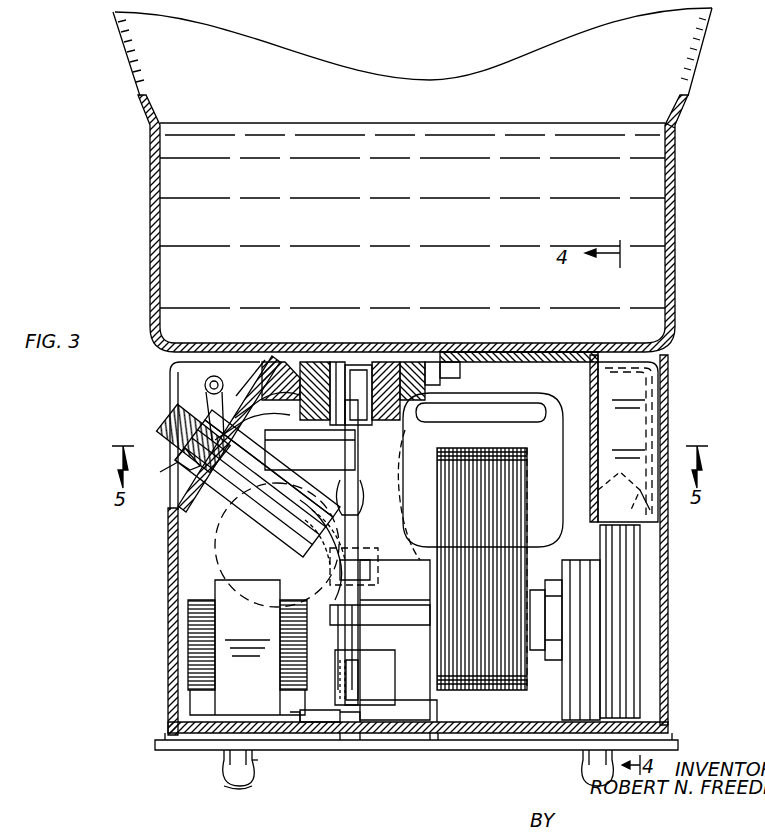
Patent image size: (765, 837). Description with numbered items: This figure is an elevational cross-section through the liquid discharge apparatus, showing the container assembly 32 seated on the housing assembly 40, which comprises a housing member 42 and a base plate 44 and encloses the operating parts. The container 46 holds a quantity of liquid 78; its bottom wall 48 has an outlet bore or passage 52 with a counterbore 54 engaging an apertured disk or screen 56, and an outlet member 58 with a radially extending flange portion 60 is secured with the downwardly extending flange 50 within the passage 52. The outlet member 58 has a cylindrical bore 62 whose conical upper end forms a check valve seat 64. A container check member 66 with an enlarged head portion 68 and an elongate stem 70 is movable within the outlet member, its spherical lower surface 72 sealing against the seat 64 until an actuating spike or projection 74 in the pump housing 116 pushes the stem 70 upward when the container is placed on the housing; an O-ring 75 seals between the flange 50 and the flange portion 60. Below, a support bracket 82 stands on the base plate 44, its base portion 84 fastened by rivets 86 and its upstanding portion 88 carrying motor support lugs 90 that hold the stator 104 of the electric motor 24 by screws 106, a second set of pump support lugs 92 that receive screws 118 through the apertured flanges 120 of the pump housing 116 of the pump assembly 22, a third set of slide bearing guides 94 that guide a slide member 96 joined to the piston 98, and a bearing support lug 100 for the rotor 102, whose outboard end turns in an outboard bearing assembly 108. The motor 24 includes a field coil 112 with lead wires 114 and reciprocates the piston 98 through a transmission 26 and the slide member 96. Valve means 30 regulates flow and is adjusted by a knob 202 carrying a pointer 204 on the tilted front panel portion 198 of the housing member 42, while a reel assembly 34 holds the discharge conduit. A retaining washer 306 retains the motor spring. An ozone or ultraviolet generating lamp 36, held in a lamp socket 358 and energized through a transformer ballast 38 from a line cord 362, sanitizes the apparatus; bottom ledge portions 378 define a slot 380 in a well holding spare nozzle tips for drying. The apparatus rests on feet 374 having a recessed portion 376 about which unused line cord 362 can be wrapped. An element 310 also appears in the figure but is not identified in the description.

The pump assembly 22 is at (285, 616).
The electric motor 24 is at (530, 690).
The transmission 26 is at (352, 750).
The valve means 30 is at (168, 540).
The container assembly 32 is at (692, 184).
The reel assembly 34 is at (178, 560).
The ozone or ultraviolet generating lamp 36 is at (650, 390).
The transformer ballast 38 is at (222, 740).
The housing assembly 40 is at (678, 600).
The housing member 42 is at (640, 548).
The base plate 44 is at (540, 745).
The container 46 is at (676, 140).
The bottom wall 48 is at (452, 352).
The flange 50 is at (404, 360).
The outlet bore or passage 52 is at (390, 360).
The counterbore 54 is at (312, 360).
The apertured disk or screen 56 is at (356, 364).
The outlet member 58 is at (450, 362).
The flange portion 60 is at (267, 405).
The bore or passage 62 is at (252, 427).
The check valve seat 64 is at (290, 360).
The container check member 66 is at (362, 368).
The enlarged head portion 68 is at (338, 360).
The elongate stem 70 is at (310, 449).
The lower surface 72 is at (418, 398).
The actuating spike or projection 74 is at (345, 470).
The O-ring 75 is at (430, 362).
The liquid 78 is at (248, 140).
The support bracket 82 is at (437, 735).
The base portion 84 is at (305, 735).
The rivets 86 is at (325, 733).
The upstanding portion 88 is at (436, 706).
The motor support lugs 90 is at (392, 512).
The pump support lugs 92 is at (354, 571).
The slide bearing guides 94 is at (335, 680).
The slide member 96 is at (340, 620).
The piston 98 is at (272, 538).
The bearing support lug 100 is at (416, 495).
The rotor 102 is at (562, 610).
The stator 104 is at (560, 480).
The screws 106 is at (548, 648).
The outboard bearing assembly 108 is at (548, 575).
The field coil 112 is at (598, 420).
The lead wires 114 is at (568, 352).
The pump housing 116 is at (254, 488).
The screws 118 is at (365, 497).
The apertured flanges 120 is at (350, 480).
The front panel portion 198 is at (236, 396).
The knob 202 is at (192, 408).
The pointer 204 is at (178, 460).
The retaining washer 306 is at (270, 514).
The pivot 310 is at (205, 383).
The lamp socket 358 is at (620, 580).
The line cord 362 is at (668, 728).
The feet 374 is at (240, 787).
The recessed portion 376 is at (258, 770).
The bottom ledge portions 378 is at (619, 483).
The slot 380 is at (652, 506).